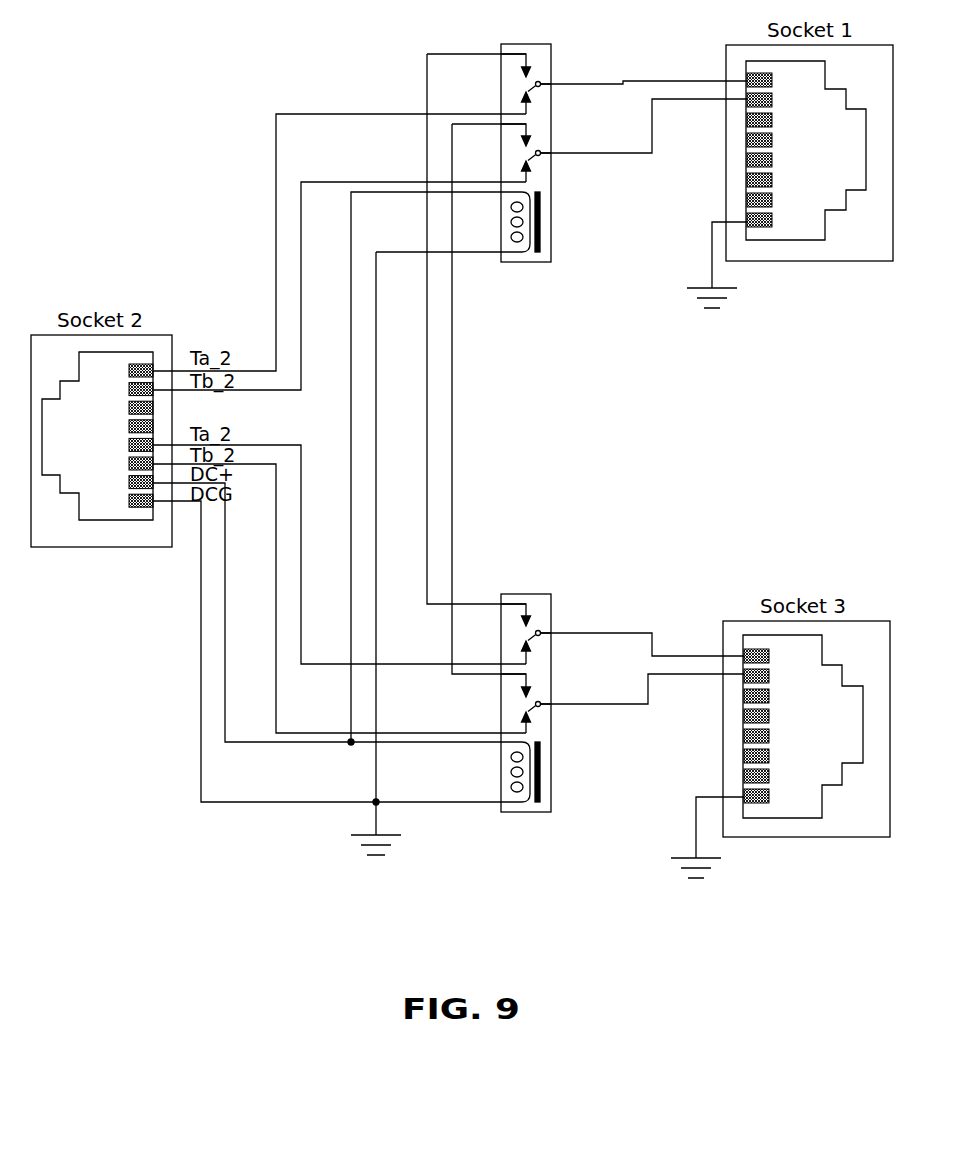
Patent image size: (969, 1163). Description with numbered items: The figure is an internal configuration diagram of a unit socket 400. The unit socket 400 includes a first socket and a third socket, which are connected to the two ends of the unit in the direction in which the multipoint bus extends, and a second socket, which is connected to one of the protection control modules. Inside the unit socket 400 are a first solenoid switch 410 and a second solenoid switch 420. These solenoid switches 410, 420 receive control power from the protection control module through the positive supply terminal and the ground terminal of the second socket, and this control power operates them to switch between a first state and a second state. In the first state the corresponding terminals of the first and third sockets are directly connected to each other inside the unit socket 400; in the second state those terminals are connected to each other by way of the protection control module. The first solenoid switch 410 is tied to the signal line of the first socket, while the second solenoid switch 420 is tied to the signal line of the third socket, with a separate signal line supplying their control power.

The unit socket 400 is at (548, 900).
The first solenoid switch 410 is at (523, 263).
The second solenoid switch 420 is at (523, 594).